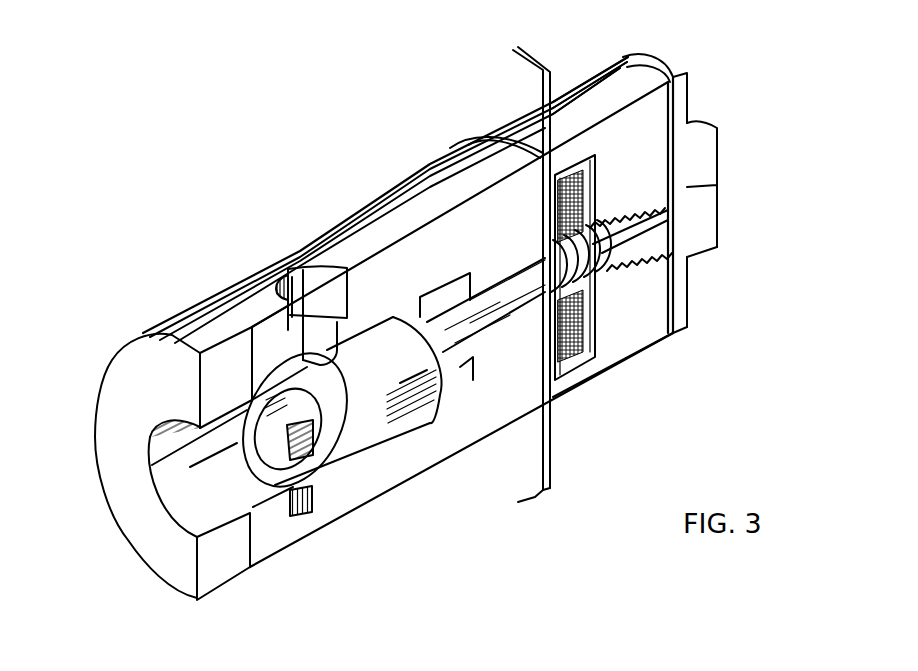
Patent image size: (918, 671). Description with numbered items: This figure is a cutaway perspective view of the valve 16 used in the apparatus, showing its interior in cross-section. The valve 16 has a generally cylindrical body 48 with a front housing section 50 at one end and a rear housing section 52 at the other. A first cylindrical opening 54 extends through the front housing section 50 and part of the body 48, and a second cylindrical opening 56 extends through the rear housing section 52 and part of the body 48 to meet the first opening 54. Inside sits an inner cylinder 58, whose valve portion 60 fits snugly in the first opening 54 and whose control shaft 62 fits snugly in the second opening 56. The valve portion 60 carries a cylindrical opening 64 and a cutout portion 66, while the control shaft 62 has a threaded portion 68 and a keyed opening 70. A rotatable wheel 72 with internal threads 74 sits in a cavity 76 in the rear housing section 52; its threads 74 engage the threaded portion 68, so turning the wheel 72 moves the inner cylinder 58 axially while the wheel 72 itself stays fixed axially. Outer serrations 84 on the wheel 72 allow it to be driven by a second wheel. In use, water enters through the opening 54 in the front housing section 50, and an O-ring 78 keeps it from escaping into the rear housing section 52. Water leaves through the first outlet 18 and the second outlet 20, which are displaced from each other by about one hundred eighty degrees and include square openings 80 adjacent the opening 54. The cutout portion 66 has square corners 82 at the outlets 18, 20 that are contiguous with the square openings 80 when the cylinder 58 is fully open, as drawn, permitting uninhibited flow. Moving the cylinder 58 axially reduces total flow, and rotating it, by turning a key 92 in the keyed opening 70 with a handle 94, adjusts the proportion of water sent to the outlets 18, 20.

The valve 16 is at (465, 486).
The first outlet 18 is at (290, 318).
The second outlet 20 is at (311, 514).
The body 48 is at (383, 193).
The front housing section 50 is at (157, 322).
The rear housing section 52 is at (593, 97).
The first cylindrical opening 54 is at (237, 488).
The second cylindrical opening 56 is at (467, 323).
The inner cylinder 58 is at (398, 448).
The valve portion 60 is at (443, 398).
The control shaft 62 is at (555, 449).
The cylindrical opening 64 is at (305, 465).
The cutout portion 66 is at (362, 422).
The threaded portion 68 is at (618, 275).
The keyed opening 70 is at (612, 253).
The rotatable wheel 72 is at (590, 243).
The internal threads 74 is at (447, 160).
The cavity 76 is at (595, 173).
The O-ring 78 is at (482, 292).
The square openings 80 is at (280, 300).
The square corners 82 is at (250, 397).
The outer serrations 84 is at (543, 148).
The key 92 is at (700, 197).
The handle 94 is at (707, 155).